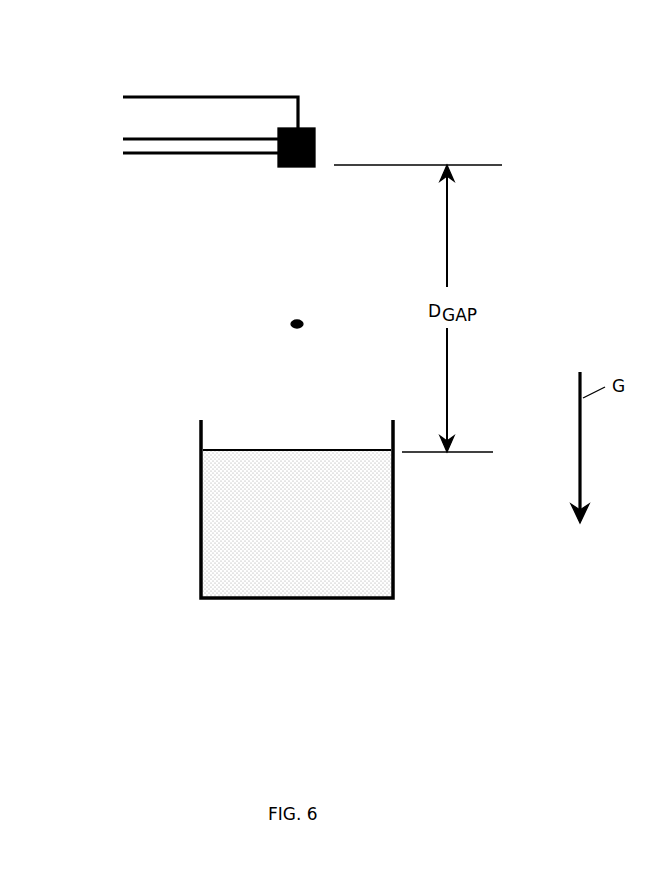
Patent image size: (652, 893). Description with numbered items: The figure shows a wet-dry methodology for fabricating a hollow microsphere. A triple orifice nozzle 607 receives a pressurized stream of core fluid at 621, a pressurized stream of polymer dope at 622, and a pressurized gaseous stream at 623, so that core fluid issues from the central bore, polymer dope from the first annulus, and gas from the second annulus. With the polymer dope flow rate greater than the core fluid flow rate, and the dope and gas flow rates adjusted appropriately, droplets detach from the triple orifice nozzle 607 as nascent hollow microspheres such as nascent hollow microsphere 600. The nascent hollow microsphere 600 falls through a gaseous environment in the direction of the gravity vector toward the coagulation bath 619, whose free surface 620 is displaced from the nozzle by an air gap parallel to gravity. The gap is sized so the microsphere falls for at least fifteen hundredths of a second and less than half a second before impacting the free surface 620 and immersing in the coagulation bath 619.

The core fluid inlet 621 is at (147, 97).
The polymer dope inlet 622 is at (147, 138).
The gaseous stream inlet 623 is at (150, 154).
The triple orifice nozzle 607 is at (316, 146).
The nascent hollow microsphere 600 is at (291, 322).
The free surface 620 is at (247, 448).
The coagulation bath 619 is at (257, 508).